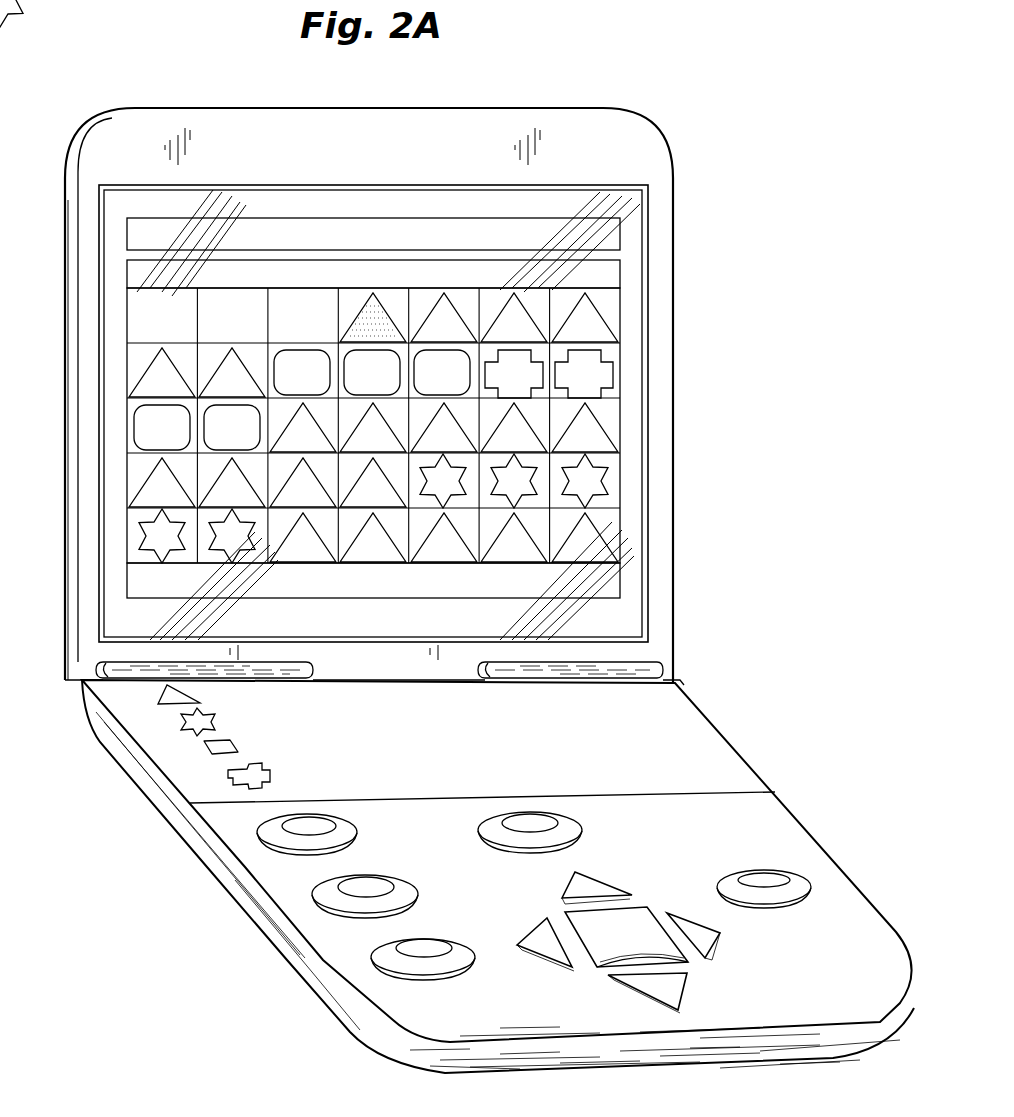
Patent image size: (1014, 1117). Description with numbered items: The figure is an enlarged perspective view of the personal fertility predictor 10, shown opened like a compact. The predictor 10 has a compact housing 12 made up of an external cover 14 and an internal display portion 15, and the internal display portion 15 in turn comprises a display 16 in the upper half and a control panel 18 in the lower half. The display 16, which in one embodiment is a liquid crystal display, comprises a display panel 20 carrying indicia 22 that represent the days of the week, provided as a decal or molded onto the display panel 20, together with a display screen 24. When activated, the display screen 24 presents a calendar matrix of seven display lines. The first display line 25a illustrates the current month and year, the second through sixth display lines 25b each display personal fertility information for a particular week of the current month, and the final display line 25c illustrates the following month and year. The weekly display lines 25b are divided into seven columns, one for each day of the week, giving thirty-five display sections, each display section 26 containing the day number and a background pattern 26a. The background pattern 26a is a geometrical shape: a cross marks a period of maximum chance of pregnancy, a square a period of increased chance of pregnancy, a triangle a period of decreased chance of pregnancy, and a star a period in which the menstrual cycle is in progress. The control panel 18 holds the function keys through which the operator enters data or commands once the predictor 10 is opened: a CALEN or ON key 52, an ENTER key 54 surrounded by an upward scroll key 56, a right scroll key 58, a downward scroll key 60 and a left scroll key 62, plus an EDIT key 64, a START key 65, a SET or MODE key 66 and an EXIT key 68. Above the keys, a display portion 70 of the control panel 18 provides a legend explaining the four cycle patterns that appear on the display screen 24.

The personal fertility predictor 10 is at (736, 66).
The compact housing 12 is at (606, 111).
The external cover 14 is at (74, 240).
The internal display portion 15 is at (738, 724).
The display 16 is at (650, 636).
The control panel 18 is at (783, 818).
The display panel 20 is at (612, 216).
The indicia 22 is at (614, 239).
The display screen 24 is at (133, 430).
The first display line 25a is at (610, 273).
The second through sixth display lines 25b is at (429, 282).
The final display line 25c is at (622, 586).
The display section 26 is at (612, 470).
The background pattern 26a is at (612, 485).
The CALEN or ON key 52 is at (433, 938).
The ENTER key 54 is at (637, 907).
The upward scroll key 56 is at (598, 880).
The right scroll key 58 is at (710, 946).
The downward scroll key 60 is at (624, 983).
The left scroll key 62 is at (534, 957).
The EDIT key 64 is at (360, 838).
The START key 65 is at (575, 832).
The SET or MODE key 66 is at (380, 882).
The EXIT key 68 is at (797, 872).
The display portion 70 is at (155, 733).